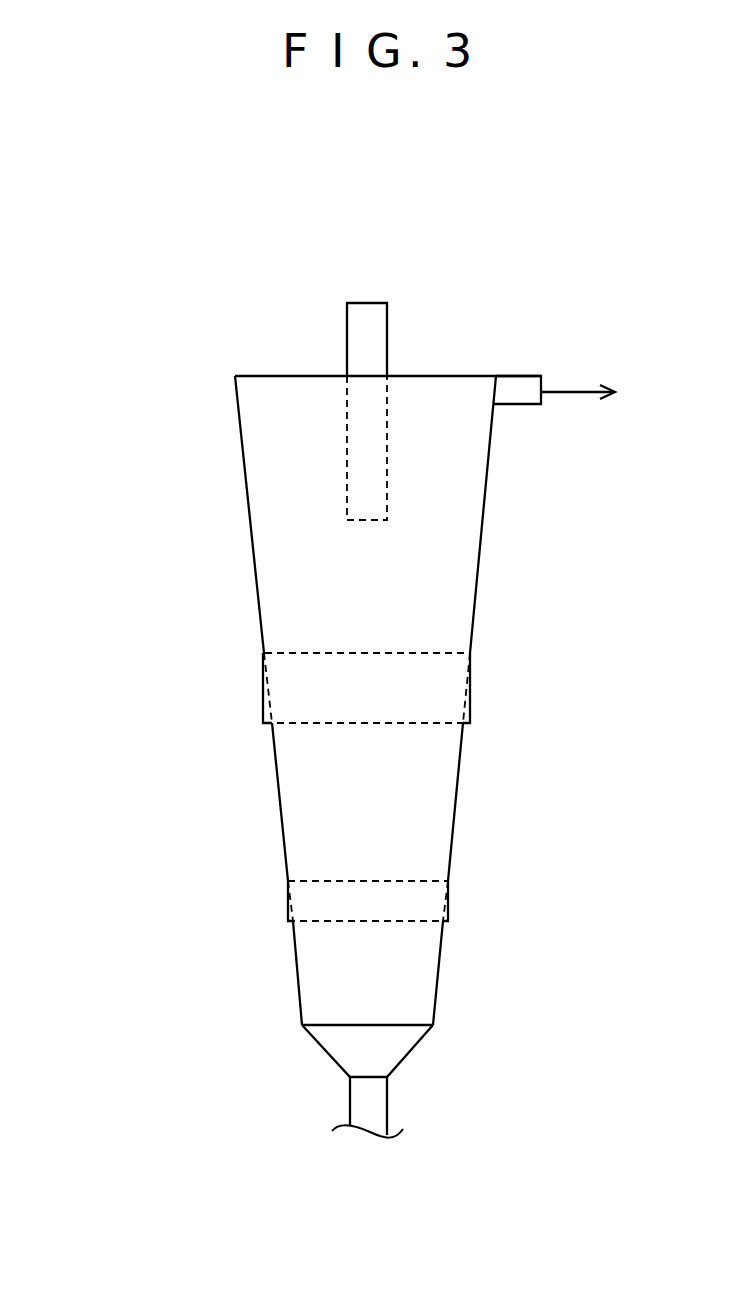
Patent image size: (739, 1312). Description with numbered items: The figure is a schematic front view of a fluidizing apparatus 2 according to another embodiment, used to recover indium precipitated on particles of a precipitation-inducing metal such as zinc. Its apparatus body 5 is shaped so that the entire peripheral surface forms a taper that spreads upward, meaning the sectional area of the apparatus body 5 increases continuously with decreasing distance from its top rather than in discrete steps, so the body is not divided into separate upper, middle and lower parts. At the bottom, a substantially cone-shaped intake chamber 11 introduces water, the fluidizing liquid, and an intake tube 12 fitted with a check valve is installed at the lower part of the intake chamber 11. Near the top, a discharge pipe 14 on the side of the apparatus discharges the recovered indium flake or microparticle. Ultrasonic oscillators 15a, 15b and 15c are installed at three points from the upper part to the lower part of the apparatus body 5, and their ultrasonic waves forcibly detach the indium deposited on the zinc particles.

The fluidizing apparatus 2 is at (195, 612).
The apparatus body 5 is at (246, 530).
The intake chamber 11 is at (397, 1043).
The intake tube 12 is at (375, 1105).
The discharge pipe 14 is at (526, 383).
The ultrasonic oscillator 15a is at (387, 340).
The ultrasonic oscillator 15b is at (407, 678).
The ultrasonic oscillator 15c is at (393, 892).